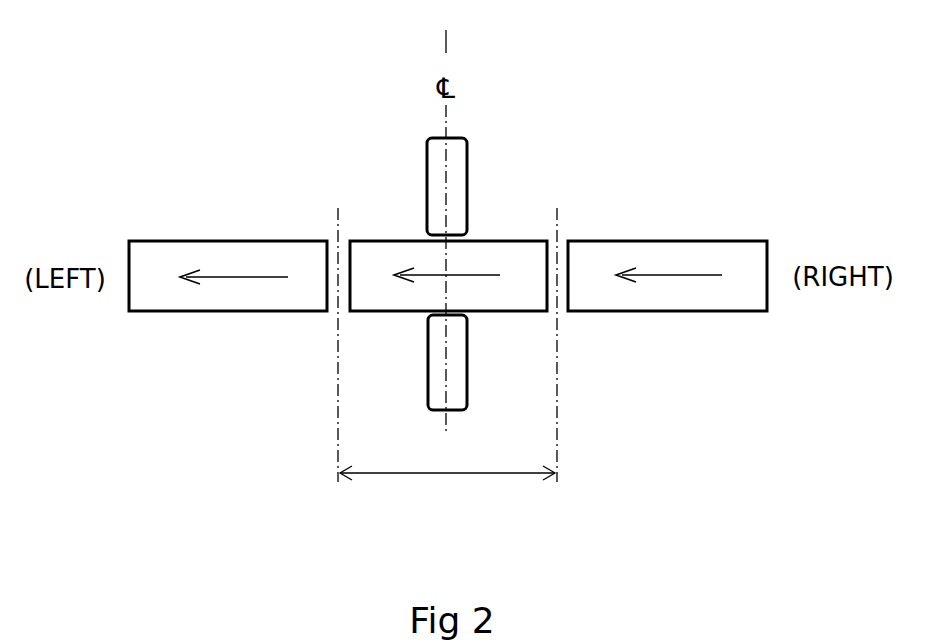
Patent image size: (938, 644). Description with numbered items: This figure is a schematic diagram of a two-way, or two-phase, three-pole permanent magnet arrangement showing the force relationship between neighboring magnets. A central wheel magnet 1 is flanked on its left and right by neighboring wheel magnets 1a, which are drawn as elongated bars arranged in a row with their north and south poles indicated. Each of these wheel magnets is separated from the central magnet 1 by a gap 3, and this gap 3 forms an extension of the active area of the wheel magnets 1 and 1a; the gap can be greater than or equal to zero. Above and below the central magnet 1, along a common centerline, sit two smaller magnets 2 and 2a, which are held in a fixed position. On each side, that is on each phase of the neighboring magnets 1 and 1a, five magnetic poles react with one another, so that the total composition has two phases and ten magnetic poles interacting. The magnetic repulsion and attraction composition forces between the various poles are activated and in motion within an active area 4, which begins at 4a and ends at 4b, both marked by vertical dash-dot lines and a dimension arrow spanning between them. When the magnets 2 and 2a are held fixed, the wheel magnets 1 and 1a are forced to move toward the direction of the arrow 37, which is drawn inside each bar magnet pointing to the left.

The magnet 1 is at (377, 250).
The neighboring magnet 1a is at (172, 255).
The magnet 2 is at (457, 390).
The magnet 2a is at (455, 158).
The gap 3 is at (333, 245).
The arrow 37 is at (265, 275).
The active area 4 is at (445, 472).
The beginning of active area 4a is at (337, 417).
The end of active area 4b is at (557, 423).